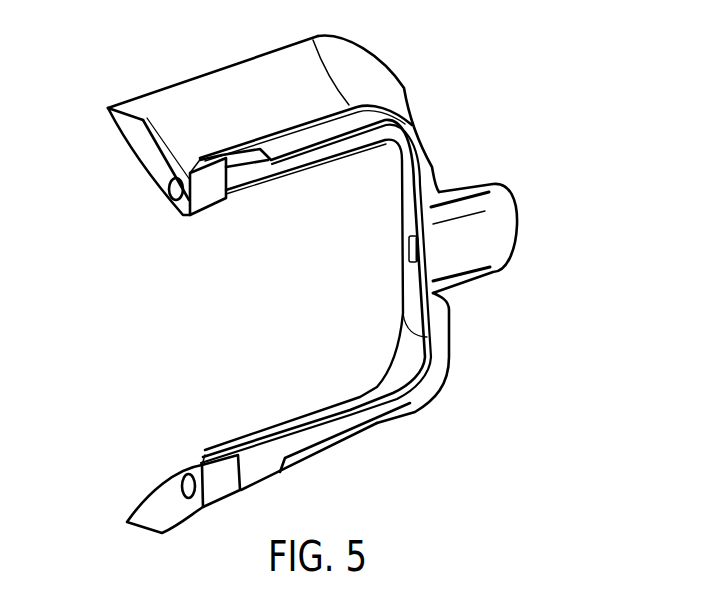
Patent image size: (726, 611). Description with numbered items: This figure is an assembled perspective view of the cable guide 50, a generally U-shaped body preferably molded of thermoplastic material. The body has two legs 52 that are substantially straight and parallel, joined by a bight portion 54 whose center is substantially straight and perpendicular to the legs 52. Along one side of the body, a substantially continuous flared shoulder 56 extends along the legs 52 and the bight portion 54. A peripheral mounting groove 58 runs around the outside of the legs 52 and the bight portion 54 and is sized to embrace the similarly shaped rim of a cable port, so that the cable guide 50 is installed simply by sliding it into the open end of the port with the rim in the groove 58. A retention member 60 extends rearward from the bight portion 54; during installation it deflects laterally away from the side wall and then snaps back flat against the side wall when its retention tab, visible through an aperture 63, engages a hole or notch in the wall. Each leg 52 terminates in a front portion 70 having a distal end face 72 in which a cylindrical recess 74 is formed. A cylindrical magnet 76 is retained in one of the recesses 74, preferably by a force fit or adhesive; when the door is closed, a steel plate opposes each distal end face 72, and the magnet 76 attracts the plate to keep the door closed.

The cable guide 50 is at (484, 66).
The legs 52 is at (260, 177).
The bight portion 54 is at (407, 198).
The flared shoulder 56 is at (238, 83).
The peripheral mounting groove 58 is at (362, 120).
The retention member 60 is at (503, 232).
The aperture 63 is at (407, 253).
The front portion 70 is at (203, 197).
The distal end face 72 is at (151, 155).
The cylindrical recess 74 is at (190, 483).
The cylindrical magnet 76 is at (177, 194).